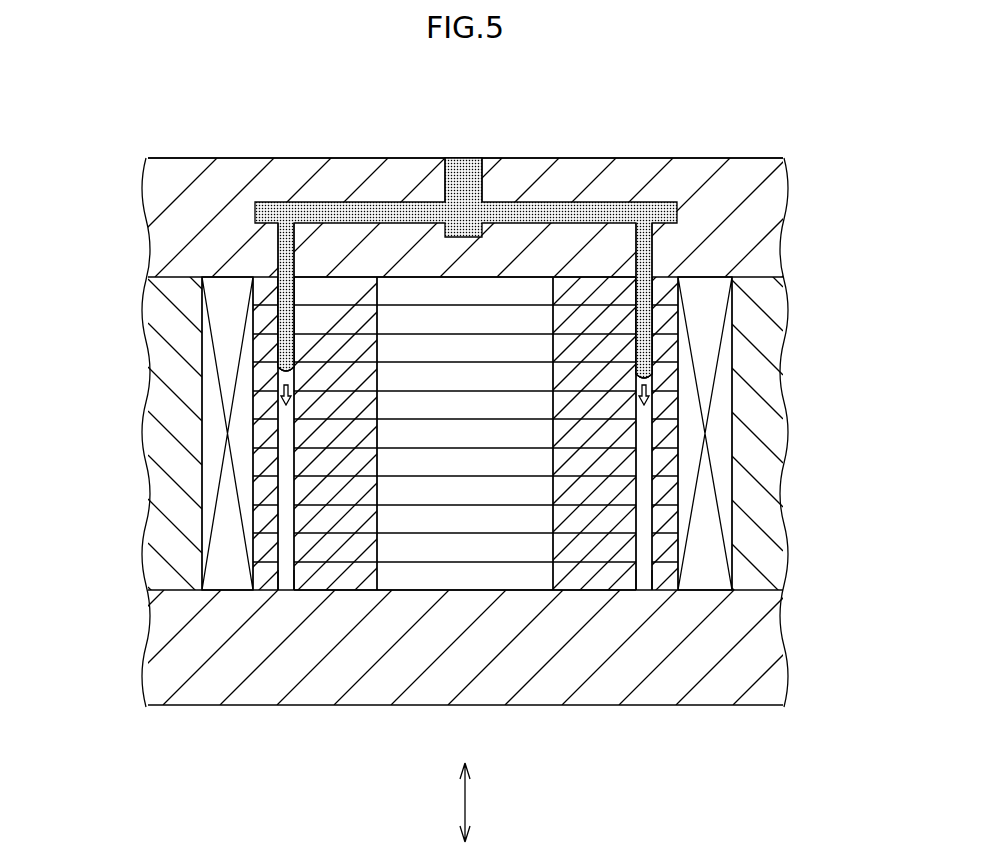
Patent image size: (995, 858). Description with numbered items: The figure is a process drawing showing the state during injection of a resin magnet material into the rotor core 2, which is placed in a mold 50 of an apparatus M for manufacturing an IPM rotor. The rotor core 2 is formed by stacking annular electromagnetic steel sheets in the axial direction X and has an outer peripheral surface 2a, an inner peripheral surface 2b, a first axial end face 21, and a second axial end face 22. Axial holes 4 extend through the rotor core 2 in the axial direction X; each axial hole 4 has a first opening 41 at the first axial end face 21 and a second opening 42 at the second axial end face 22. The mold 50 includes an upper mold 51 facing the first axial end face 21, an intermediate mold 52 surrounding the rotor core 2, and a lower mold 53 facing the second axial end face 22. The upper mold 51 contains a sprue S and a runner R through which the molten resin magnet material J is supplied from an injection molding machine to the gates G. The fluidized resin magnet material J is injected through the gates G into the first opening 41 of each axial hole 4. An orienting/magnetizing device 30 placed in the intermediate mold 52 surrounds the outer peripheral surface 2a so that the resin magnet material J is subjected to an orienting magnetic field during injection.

The rotor core 2 is at (531, 434).
The outer peripheral surface 2a is at (680, 548).
The inner peripheral surface 2b is at (553, 543).
The axial hole 4 is at (466, 516).
The first axial end face 21 is at (583, 277).
The second axial end face 22 is at (583, 590).
The orienting/magnetizing device 30 is at (212, 437).
The first opening 41 is at (278, 286).
The second opening 42 is at (292, 586).
The mold 50 is at (783, 147).
The upper mold 51 is at (796, 217).
The intermediate mold 52 is at (796, 429).
The lower mold 53 is at (798, 642).
The gate G is at (278, 262).
The runner R is at (362, 212).
The sprue S is at (446, 187).
The resin magnet material J is at (286, 345).
The apparatus for manufacturing an IPM rotor M is at (753, 102).
The axial direction X is at (470, 800).